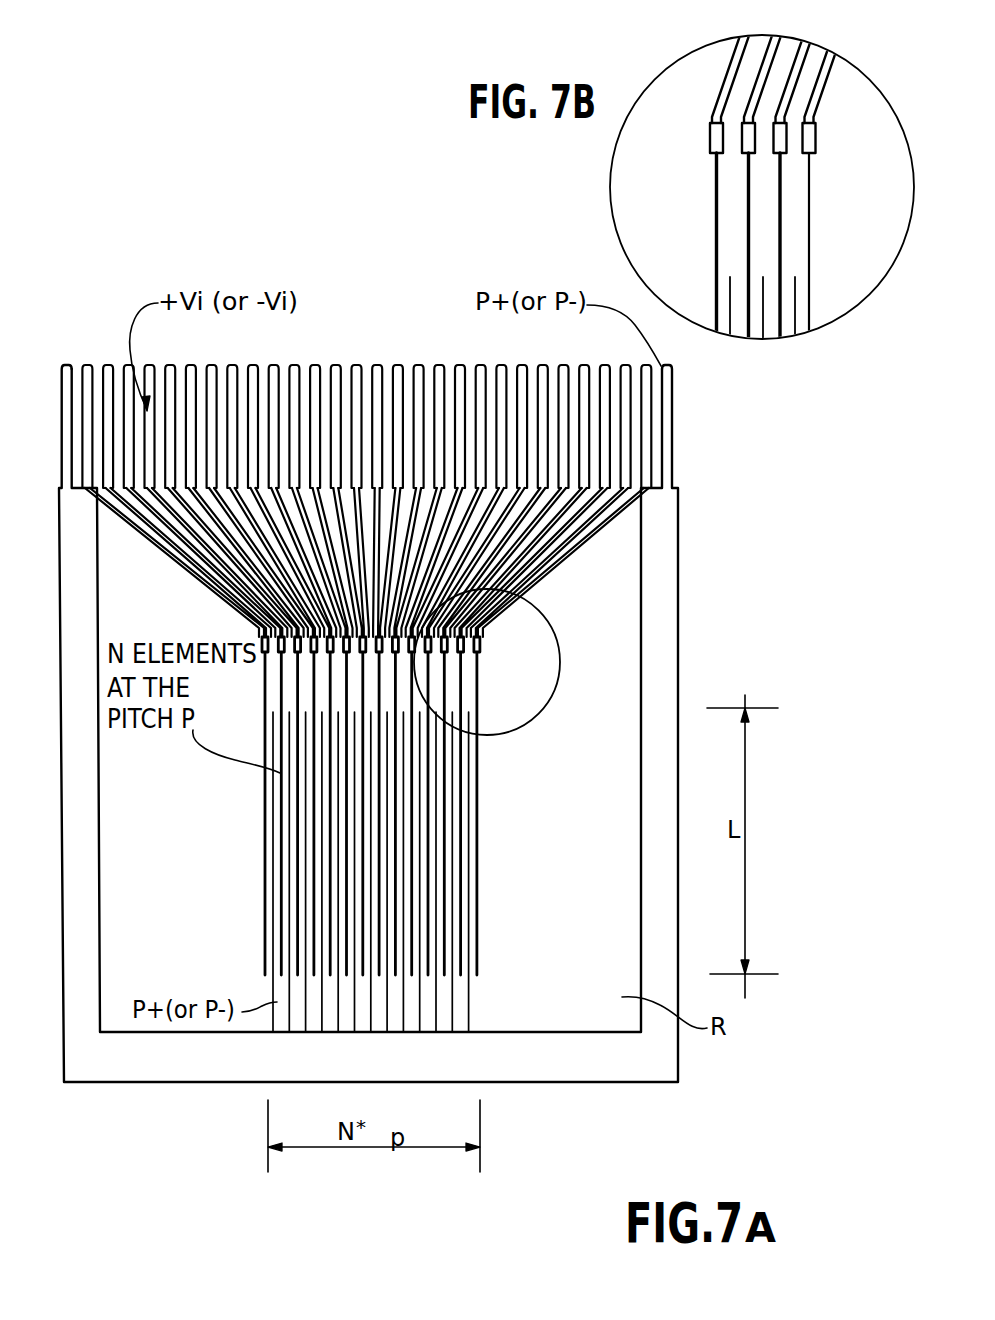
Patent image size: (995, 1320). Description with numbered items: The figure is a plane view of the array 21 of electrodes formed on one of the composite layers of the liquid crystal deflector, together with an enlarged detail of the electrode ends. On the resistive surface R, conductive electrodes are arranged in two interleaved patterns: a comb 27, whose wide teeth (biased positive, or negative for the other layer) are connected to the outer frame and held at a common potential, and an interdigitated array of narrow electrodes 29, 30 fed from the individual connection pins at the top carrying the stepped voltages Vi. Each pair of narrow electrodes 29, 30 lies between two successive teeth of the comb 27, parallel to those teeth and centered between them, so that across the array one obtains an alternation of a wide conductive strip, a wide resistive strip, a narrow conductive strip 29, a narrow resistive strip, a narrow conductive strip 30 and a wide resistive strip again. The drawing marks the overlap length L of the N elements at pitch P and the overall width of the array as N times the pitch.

In FIG. 7A, the array 21 is at (690, 630).
In FIG. 7A, the comb 27 is at (217, 1083).
In FIG. 7B, the narrow electrode 29 is at (715, 197).
In FIG. 7B, the narrow electrode 30 is at (715, 230).